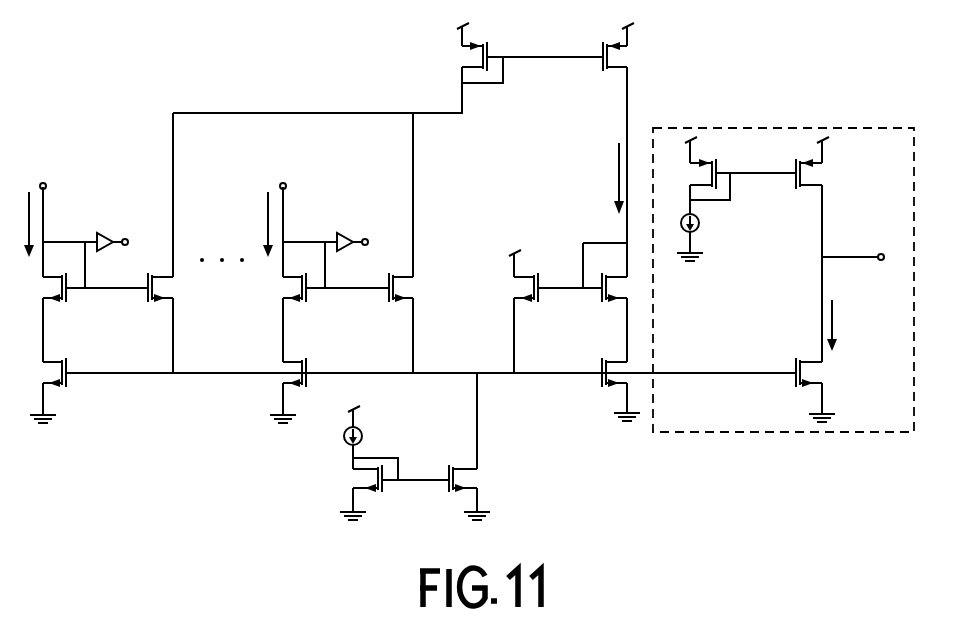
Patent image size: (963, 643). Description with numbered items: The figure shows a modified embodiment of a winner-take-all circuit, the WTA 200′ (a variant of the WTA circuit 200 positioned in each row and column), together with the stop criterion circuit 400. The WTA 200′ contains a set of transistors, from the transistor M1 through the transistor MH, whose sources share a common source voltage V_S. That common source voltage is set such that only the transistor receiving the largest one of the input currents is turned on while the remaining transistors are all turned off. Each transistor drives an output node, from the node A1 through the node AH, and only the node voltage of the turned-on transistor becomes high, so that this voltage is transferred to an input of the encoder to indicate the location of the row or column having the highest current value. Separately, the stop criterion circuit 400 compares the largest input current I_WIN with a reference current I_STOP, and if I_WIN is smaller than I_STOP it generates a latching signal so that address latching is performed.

The WTA circuit 200 is at (402, 271).
The WTA circuit 200′ is at (402, 271).
The stop criterion circuit 400 is at (862, 125).
The transistor M1 is at (175, 287).
The transistor MH is at (418, 287).
The node A1 is at (127, 239).
The node AH is at (367, 239).